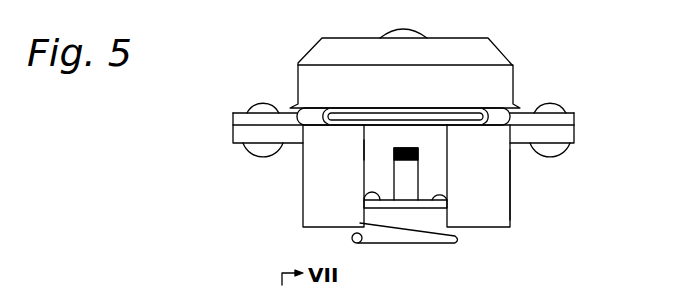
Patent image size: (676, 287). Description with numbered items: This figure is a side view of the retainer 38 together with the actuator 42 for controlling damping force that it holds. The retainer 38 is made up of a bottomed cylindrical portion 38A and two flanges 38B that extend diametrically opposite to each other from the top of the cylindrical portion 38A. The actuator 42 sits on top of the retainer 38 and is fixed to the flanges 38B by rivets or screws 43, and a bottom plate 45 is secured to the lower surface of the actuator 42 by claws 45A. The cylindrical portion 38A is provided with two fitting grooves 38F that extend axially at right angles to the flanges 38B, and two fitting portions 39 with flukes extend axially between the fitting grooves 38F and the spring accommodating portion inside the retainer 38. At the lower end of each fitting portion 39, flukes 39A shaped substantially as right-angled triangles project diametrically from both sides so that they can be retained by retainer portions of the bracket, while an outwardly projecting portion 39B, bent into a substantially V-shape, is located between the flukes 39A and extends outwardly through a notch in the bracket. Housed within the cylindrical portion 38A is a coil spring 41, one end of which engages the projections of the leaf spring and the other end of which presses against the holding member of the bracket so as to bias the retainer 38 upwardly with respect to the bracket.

The retainer 38 is at (303, 187).
The cylindrical portion 38A is at (508, 180).
The flanges 38B is at (237, 133).
The fitting grooves 38F is at (368, 153).
The fitting portions 39 is at (428, 209).
The flukes 39A is at (374, 192).
The outwardly projecting portion 39B is at (411, 150).
The coil spring 41 is at (452, 239).
The actuator 42 is at (508, 67).
The rivets or screws 43 is at (257, 103).
The bottom plate 45 is at (578, 121).
The claws 45A is at (291, 110).